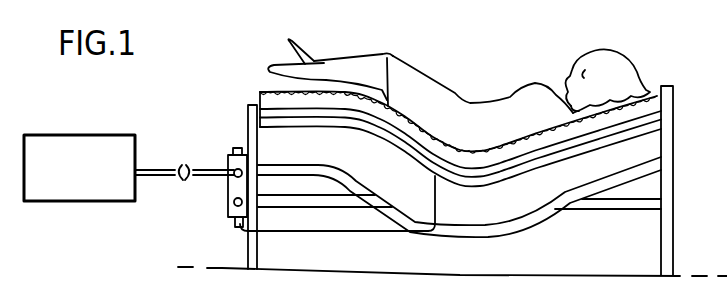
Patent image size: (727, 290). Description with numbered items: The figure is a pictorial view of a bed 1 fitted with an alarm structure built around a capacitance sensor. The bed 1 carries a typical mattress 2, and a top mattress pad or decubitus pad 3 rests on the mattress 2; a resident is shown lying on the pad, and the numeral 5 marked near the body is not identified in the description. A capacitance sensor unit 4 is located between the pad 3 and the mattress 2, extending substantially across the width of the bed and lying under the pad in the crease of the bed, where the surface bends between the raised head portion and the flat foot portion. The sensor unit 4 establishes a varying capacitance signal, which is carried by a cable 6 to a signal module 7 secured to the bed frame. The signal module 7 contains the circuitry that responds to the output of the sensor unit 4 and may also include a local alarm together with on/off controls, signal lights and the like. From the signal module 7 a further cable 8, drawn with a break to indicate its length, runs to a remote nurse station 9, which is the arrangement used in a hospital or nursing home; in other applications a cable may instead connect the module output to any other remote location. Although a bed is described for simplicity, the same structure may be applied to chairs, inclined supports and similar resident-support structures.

The bed 1 is at (540, 207).
The mattress 2 is at (406, 193).
The top mattress pad or decubitus pad 3 is at (278, 108).
The capacitance sensor unit 4 is at (462, 186).
The patient 5 is at (422, 66).
The cable 6 is at (337, 232).
The signal module 7 is at (227, 192).
The cable 8 is at (205, 165).
The remote nurse station 9 is at (80, 135).